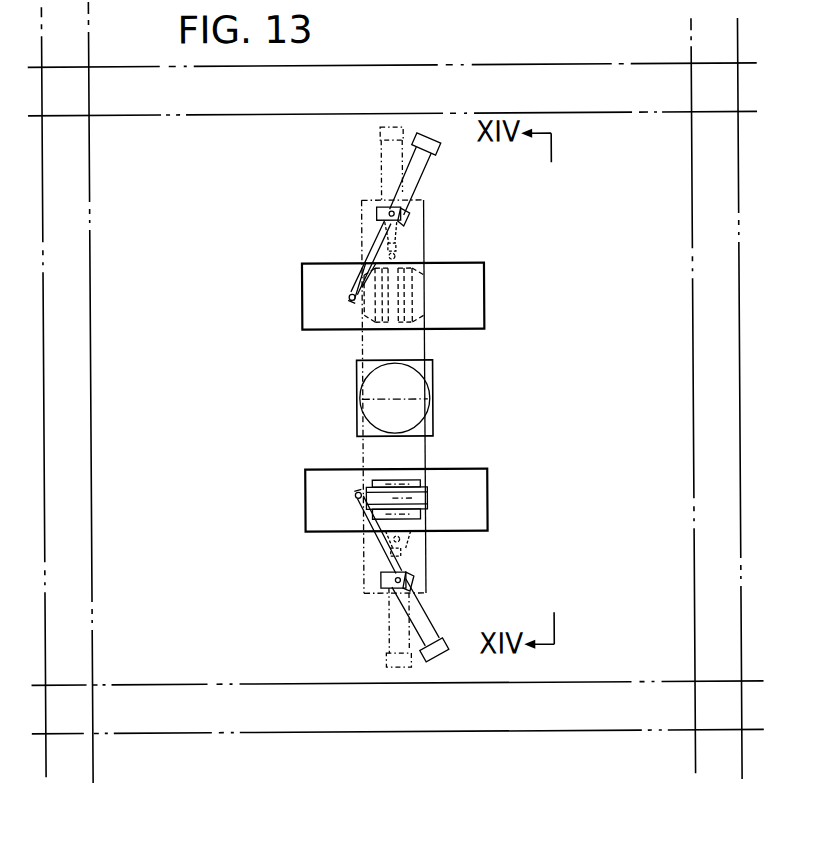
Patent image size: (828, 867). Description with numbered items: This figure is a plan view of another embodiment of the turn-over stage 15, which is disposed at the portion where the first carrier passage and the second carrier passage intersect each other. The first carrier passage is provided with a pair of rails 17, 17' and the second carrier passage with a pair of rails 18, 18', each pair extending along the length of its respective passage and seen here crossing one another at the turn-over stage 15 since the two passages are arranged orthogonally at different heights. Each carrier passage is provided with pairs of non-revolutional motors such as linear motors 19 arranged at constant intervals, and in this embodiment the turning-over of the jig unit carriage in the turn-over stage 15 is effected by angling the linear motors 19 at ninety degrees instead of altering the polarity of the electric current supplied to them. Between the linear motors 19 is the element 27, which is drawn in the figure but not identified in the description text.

The turn-over stage 15 is at (603, 177).
The rail 17 is at (397, 671).
The rail 17' is at (393, 121).
The rail 18 is at (105, 393).
The rail 18' is at (684, 399).
The linear motor 19 is at (419, 222).
The roller 27 is at (417, 383).